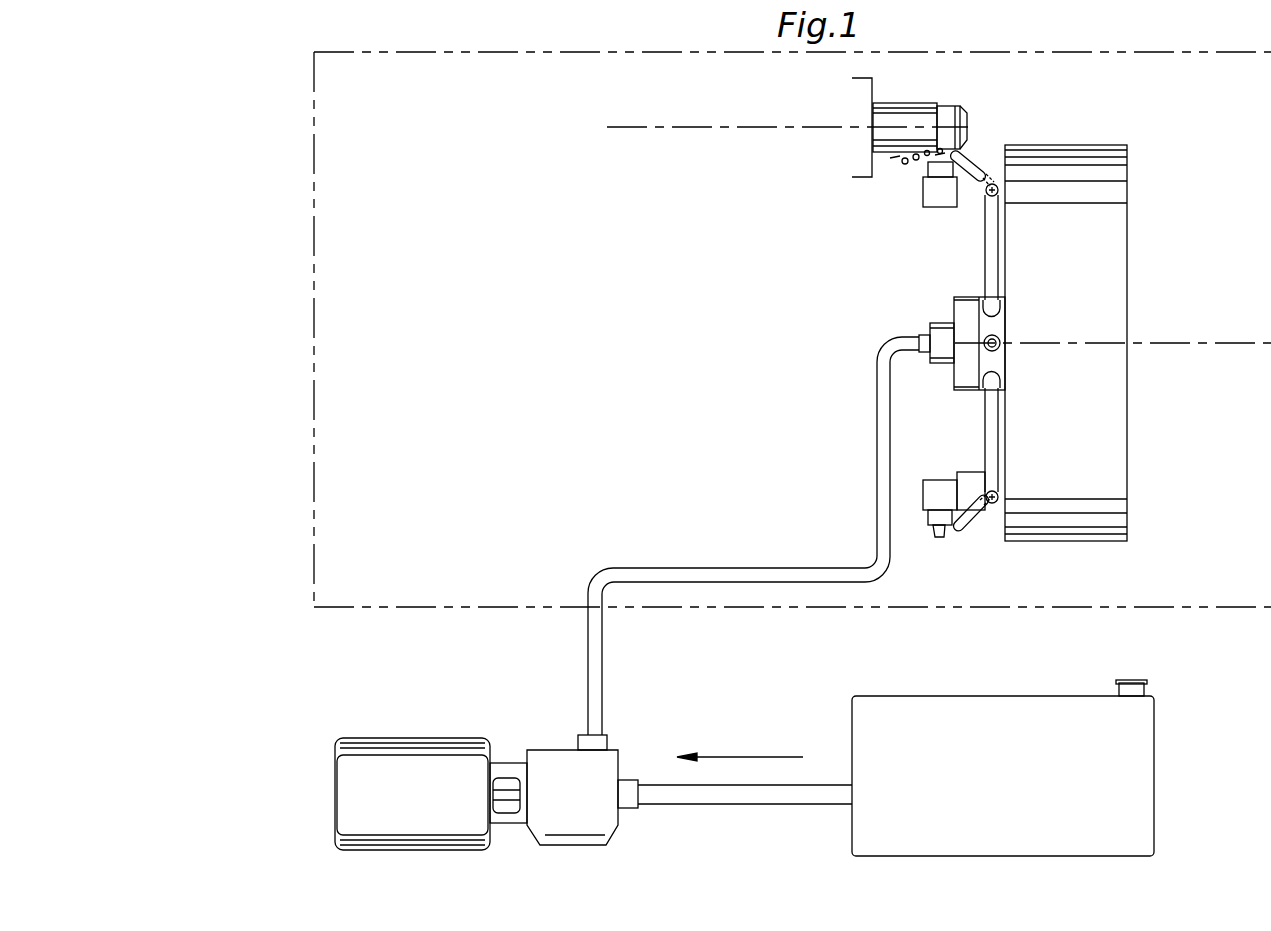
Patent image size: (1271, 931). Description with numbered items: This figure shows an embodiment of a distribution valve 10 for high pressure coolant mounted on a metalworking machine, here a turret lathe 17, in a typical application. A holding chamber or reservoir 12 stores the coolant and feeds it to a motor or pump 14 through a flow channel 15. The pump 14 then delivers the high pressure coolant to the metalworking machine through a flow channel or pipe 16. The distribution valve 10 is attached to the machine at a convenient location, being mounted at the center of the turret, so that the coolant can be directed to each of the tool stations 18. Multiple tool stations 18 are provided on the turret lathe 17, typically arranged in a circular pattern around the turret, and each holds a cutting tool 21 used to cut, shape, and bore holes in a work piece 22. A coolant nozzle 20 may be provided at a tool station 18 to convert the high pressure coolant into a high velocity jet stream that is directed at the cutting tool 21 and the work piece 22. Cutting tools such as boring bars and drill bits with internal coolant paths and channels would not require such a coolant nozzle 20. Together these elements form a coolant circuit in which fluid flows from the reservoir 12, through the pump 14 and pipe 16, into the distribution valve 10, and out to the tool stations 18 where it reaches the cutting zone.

The distribution valve 10 is at (967, 315).
The reservoir 12 is at (1138, 745).
The pump 14 is at (553, 750).
The flow channel 15 is at (842, 795).
The flow channel or pipe 16 is at (993, 260).
The turret lathe 17 is at (1110, 454).
The tool station 18 is at (972, 207).
The coolant nozzle 20 is at (952, 158).
The cutting tool 21 is at (945, 158).
The work piece 22 is at (908, 112).